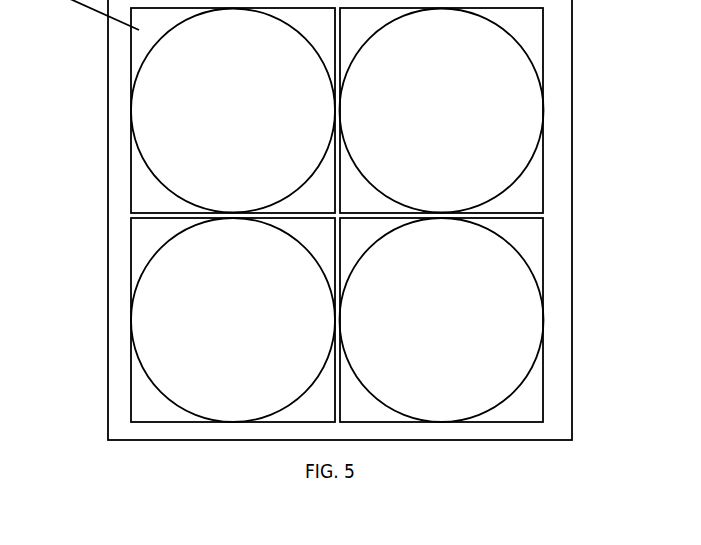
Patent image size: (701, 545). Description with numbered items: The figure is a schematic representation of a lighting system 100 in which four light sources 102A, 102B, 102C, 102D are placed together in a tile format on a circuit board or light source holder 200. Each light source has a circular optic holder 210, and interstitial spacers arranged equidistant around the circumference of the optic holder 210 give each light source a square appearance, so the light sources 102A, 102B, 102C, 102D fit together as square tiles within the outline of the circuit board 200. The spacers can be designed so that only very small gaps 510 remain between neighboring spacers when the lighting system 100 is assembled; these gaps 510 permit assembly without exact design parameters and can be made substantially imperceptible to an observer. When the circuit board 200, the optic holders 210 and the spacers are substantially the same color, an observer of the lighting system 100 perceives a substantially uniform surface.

The lighting system 100 is at (364, 220).
The circuit board or light source holder 200 is at (563, 71).
The optic holder 210 is at (131, 121).
The gaps 510 is at (140, 215).
The light source 102A is at (189, 110).
The light source 102B is at (442, 110).
The light source 102C is at (193, 301).
The light source 102D is at (442, 320).